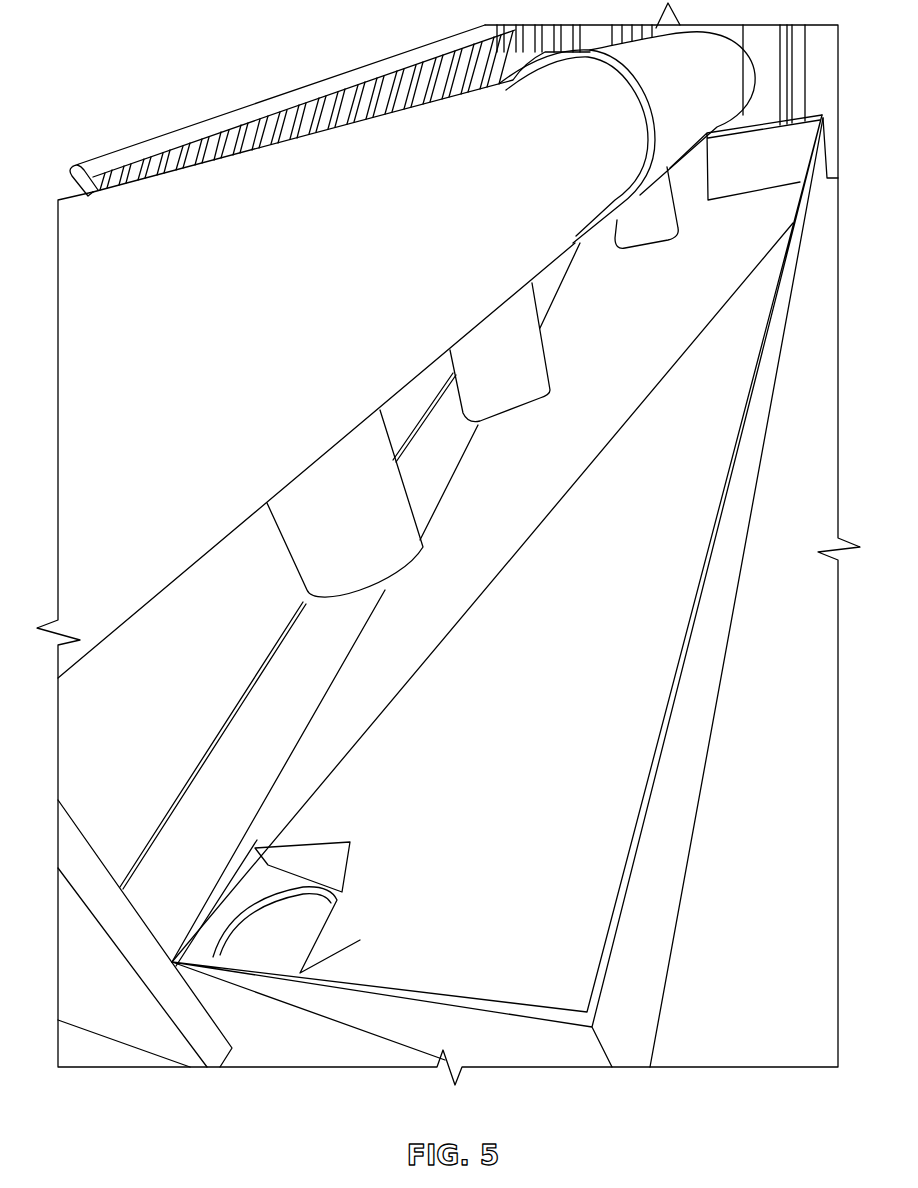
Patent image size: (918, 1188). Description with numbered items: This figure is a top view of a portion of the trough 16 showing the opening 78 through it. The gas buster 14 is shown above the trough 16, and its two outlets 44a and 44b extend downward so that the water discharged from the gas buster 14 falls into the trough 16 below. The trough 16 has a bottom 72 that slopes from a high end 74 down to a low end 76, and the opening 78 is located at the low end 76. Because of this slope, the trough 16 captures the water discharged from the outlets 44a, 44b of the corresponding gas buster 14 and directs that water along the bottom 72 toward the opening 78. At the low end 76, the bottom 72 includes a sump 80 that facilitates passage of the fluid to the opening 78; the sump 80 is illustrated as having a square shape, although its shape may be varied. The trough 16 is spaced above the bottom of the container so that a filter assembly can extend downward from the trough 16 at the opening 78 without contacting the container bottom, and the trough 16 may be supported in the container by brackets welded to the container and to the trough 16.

The gas buster 14 is at (325, 158).
The trough 16 is at (660, 933).
The first outlet 44a is at (284, 547).
The second outlet 44b is at (548, 358).
The bottom 72 is at (538, 640).
The high end 74 is at (755, 207).
The low end 76 is at (275, 818).
The opening 78 is at (232, 942).
The sump 80 is at (340, 862).